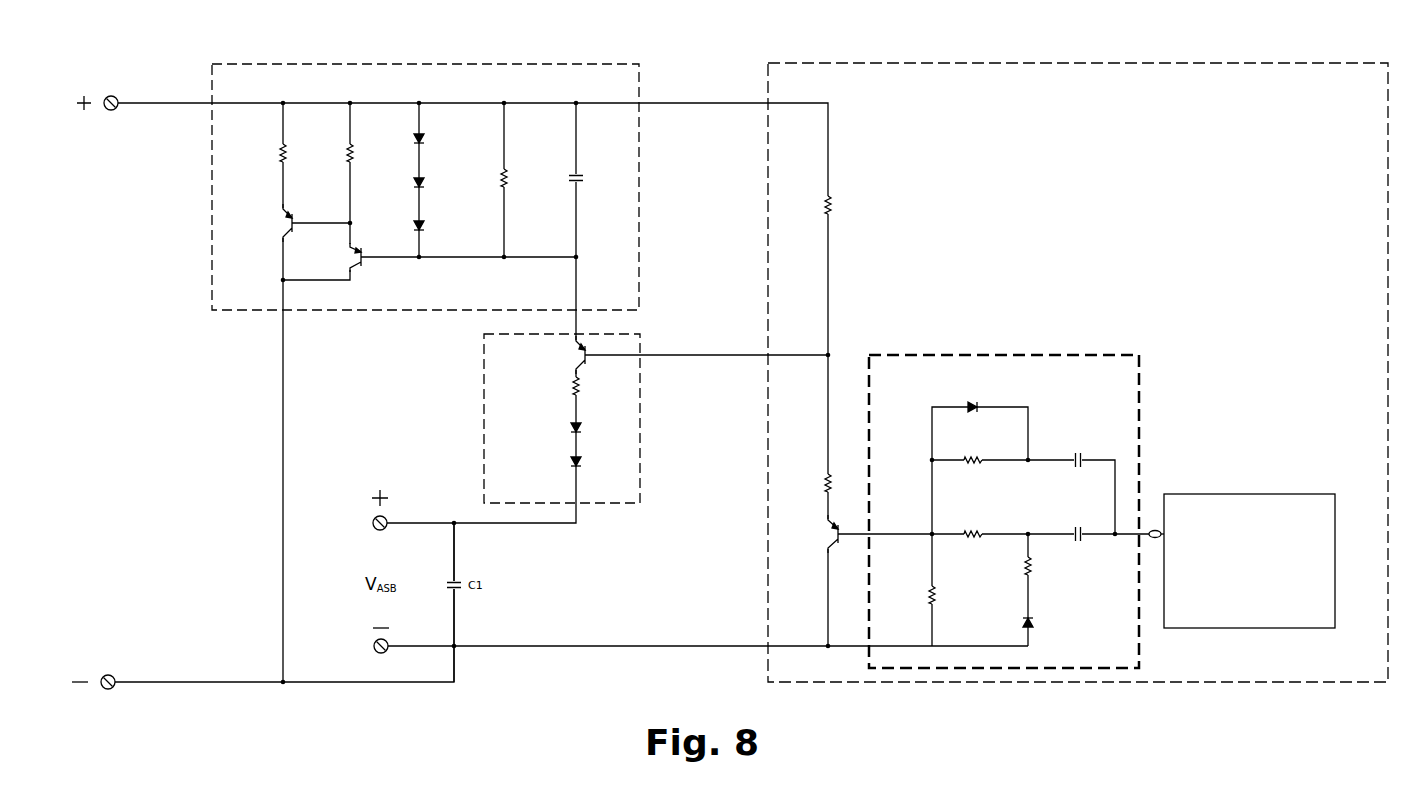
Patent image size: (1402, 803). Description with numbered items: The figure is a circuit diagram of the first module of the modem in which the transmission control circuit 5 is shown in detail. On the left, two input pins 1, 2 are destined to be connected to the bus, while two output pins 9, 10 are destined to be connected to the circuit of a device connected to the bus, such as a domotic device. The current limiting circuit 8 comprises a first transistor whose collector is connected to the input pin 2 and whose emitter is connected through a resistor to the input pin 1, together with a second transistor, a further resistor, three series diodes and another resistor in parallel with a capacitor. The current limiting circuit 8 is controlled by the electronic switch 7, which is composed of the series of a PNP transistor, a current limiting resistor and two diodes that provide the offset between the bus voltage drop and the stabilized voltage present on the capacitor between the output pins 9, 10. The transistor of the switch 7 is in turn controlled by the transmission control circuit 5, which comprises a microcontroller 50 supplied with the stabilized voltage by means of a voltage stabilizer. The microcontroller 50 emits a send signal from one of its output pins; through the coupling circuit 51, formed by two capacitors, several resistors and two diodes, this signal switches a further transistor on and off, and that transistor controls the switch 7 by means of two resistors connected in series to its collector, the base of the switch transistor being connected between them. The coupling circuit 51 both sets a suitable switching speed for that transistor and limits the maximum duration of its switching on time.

The input pin 1 is at (144, 87).
The input pin 2 is at (177, 670).
The transmission control circuit 5 is at (1078, 372).
The electronic switch 7 is at (656, 418).
The current limiting circuit 8 is at (425, 187).
The output pin 9 is at (369, 510).
The output pin 10 is at (370, 641).
The microcontroller 50 is at (1251, 490).
The coupling circuit 51 is at (1089, 353).